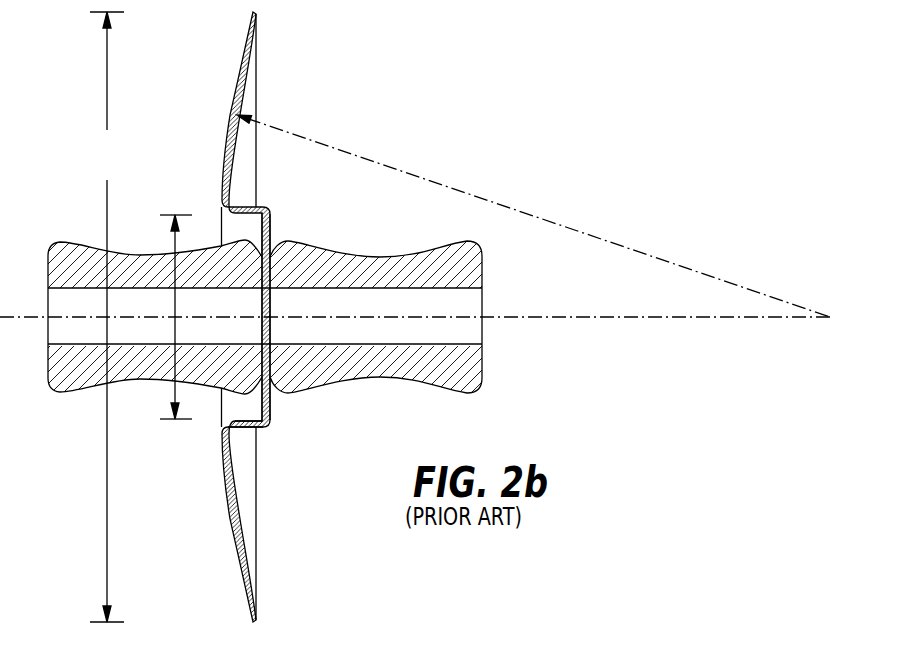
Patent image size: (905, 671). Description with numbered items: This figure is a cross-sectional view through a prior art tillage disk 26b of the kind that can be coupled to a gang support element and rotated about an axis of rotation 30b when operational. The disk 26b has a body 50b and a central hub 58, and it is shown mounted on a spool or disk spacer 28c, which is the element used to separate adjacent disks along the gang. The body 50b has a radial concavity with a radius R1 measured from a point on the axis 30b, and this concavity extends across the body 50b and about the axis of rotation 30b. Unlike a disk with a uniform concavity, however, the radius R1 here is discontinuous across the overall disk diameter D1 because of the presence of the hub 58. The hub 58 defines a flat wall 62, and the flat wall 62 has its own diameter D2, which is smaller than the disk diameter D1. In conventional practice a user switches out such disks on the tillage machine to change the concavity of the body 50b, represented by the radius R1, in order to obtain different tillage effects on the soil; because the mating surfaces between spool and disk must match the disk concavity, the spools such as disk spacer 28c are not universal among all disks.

The disk 26b is at (233, 92).
The body 50b is at (253, 62).
The disk spacer 28c is at (127, 381).
The axis of rotation 30b is at (623, 317).
The flat wall 62 is at (270, 402).
The central hub 58 is at (243, 430).
The radius R1 is at (437, 178).
The disk diameter D1 is at (107, 317).
The diameter of the flat wall D2 is at (172, 240).